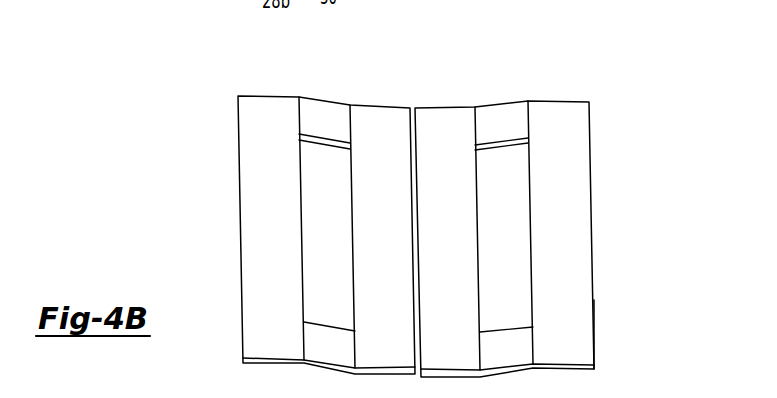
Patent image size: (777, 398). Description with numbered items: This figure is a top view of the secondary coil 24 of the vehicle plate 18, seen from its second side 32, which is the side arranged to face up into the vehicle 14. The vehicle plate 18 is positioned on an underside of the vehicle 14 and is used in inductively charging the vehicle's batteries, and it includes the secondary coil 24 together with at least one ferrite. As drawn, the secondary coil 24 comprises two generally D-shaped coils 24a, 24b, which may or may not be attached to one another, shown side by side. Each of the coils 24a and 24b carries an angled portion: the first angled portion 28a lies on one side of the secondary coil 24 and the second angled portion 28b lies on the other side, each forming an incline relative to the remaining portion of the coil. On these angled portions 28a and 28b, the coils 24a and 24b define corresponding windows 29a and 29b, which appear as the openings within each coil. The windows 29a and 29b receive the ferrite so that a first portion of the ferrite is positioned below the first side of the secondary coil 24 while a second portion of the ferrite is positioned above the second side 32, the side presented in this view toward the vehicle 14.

The vehicle 14 is at (205, 53).
The vehicle plate 18 is at (559, 71).
The secondary coil 24 is at (424, 47).
The D-shaped coil 24a is at (239, 175).
The D-shaped coil 24b is at (590, 172).
The first angled portion 28a is at (321, 119).
The second angled portion 28b is at (494, 122).
The window 29a is at (313, 243).
The window 29b is at (492, 244).
The second side 32 is at (583, 345).